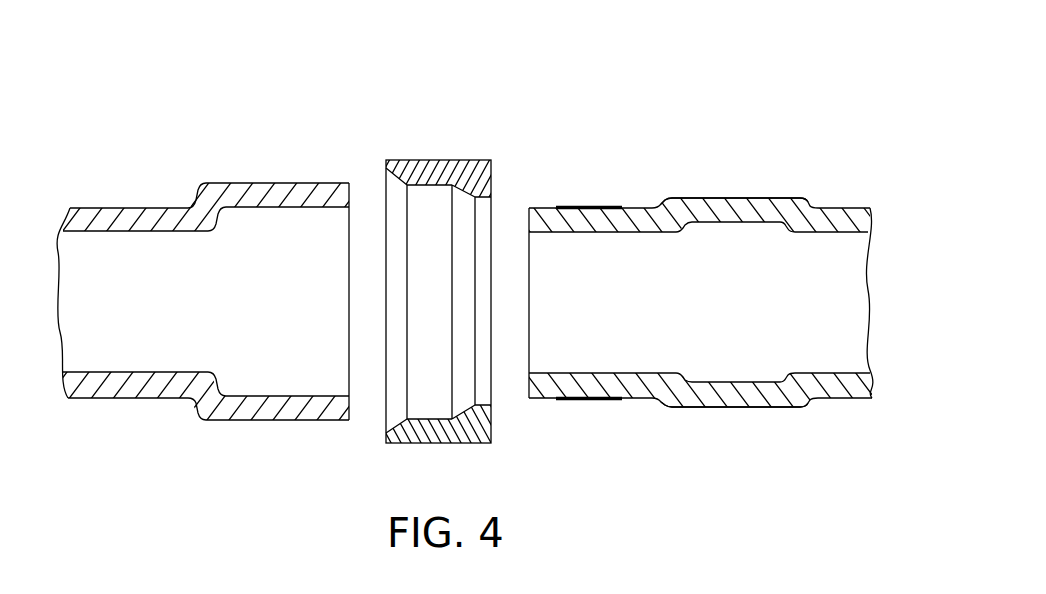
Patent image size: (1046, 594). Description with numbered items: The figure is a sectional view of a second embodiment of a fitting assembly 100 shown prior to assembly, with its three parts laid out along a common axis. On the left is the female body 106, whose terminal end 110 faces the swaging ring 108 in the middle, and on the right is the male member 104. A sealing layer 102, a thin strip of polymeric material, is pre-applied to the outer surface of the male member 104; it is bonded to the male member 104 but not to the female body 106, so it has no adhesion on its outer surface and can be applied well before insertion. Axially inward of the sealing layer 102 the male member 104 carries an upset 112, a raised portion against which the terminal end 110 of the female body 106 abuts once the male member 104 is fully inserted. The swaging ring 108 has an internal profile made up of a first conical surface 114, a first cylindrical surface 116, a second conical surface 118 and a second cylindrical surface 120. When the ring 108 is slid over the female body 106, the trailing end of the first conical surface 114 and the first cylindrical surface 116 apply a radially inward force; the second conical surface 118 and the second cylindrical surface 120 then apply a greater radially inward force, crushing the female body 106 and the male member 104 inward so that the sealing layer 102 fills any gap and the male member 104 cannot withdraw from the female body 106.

The fitting assembly 100 is at (515, 112).
The sealing layer 102 is at (584, 204).
The male member 104 is at (673, 295).
The female body 106 is at (278, 181).
The swaging ring 108 is at (437, 292).
The terminal end 110 is at (350, 182).
The upset 112 is at (729, 197).
The first conical surface 114 is at (403, 421).
The first cylindrical surface 116 is at (429, 418).
The second conical surface 118 is at (465, 410).
The second cylindrical surface 120 is at (487, 402).